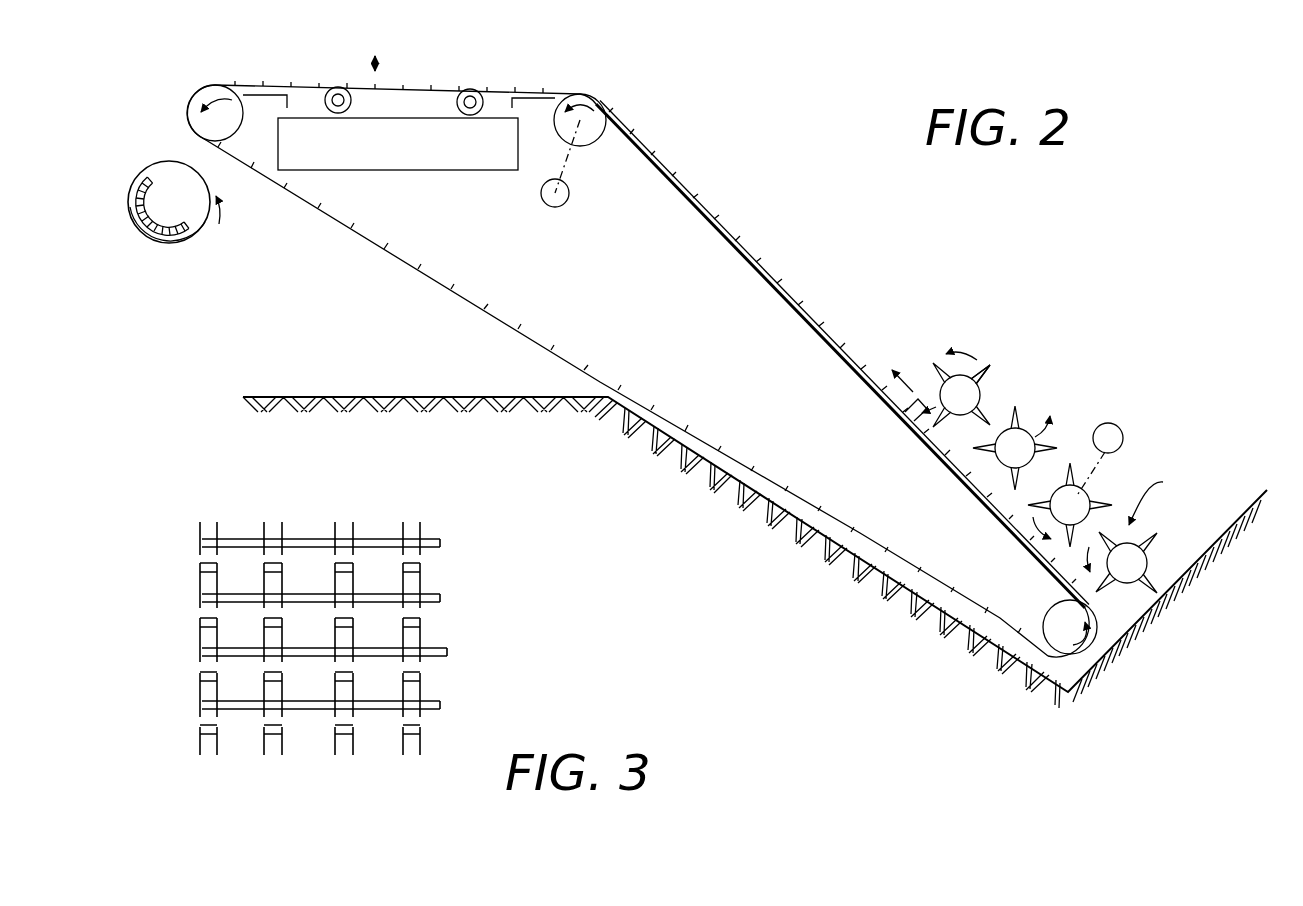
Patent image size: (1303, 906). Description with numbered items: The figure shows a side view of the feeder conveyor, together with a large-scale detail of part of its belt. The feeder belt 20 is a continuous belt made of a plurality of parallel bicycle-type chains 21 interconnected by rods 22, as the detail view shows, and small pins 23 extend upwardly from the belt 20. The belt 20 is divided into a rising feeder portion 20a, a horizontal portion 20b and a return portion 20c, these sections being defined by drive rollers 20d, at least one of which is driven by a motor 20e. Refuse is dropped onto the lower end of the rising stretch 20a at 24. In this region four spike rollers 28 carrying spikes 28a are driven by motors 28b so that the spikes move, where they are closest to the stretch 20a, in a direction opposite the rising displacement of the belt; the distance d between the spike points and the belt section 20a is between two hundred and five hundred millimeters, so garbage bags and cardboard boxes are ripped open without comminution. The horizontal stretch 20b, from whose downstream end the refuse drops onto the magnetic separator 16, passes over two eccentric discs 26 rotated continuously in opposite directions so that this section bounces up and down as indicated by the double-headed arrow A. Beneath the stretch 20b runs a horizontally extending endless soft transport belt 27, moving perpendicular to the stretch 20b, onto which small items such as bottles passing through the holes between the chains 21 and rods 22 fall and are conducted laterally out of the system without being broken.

In FIG. 2, the magnetic separator 16 is at (168, 246).
In FIG. 2, the feeder belt 20 is at (638, 345).
In FIG. 2, the rising feeder portion 20a is at (834, 329).
In FIG. 2, the horizontal portion 20b is at (398, 80).
In FIG. 2, the return portion 20c is at (588, 368).
In FIG. 2, the drive rollers 20d is at (218, 122).
In FIG. 2, the motor 20e is at (568, 204).
In FIG. 3, the bicycle-type chains 21 is at (422, 631).
In FIG. 3, the rods 22 is at (450, 710).
In FIG. 2, the pins 23 is at (742, 246).
In FIG. 2, the refuse drop location 24 is at (1160, 500).
In FIG. 2, the eccentric discs 26 is at (457, 101).
In FIG. 2, the soft transport belt 27 is at (417, 170).
In FIG. 2, the spike rollers 28 is at (970, 393).
In FIG. 2, the spikes 28a is at (990, 366).
In FIG. 2, the motors 28b is at (1117, 424).
In FIG. 2, the double-headed arrow A is at (372, 62).
In FIG. 2, the distance d is at (904, 424).